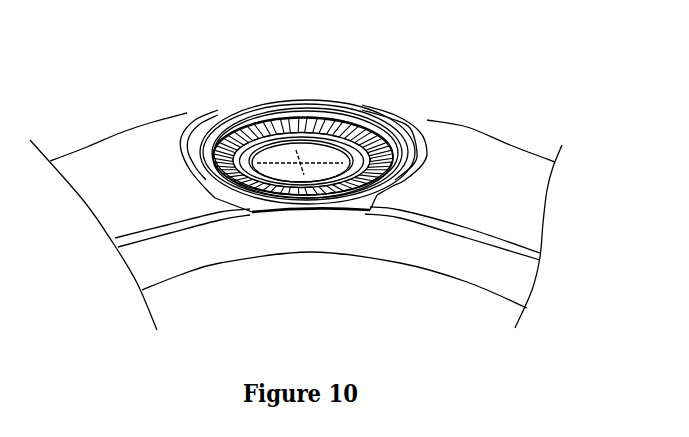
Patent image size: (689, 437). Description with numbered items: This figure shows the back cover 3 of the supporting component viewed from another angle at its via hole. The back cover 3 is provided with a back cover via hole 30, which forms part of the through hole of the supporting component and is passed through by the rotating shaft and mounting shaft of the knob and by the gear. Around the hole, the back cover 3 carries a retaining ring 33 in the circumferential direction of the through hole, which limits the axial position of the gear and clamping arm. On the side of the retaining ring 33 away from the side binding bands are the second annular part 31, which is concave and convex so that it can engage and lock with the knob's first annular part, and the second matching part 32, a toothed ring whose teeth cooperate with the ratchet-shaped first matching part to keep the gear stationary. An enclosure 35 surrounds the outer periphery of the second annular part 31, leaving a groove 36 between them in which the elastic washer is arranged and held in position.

The back cover 3 is at (497, 150).
The back cover via hole 30 is at (305, 170).
The second annular part 31 is at (381, 142).
The second matching part 32 is at (261, 121).
The retaining ring 33 is at (283, 140).
The enclosure 35 is at (203, 150).
The groove 36 is at (225, 145).